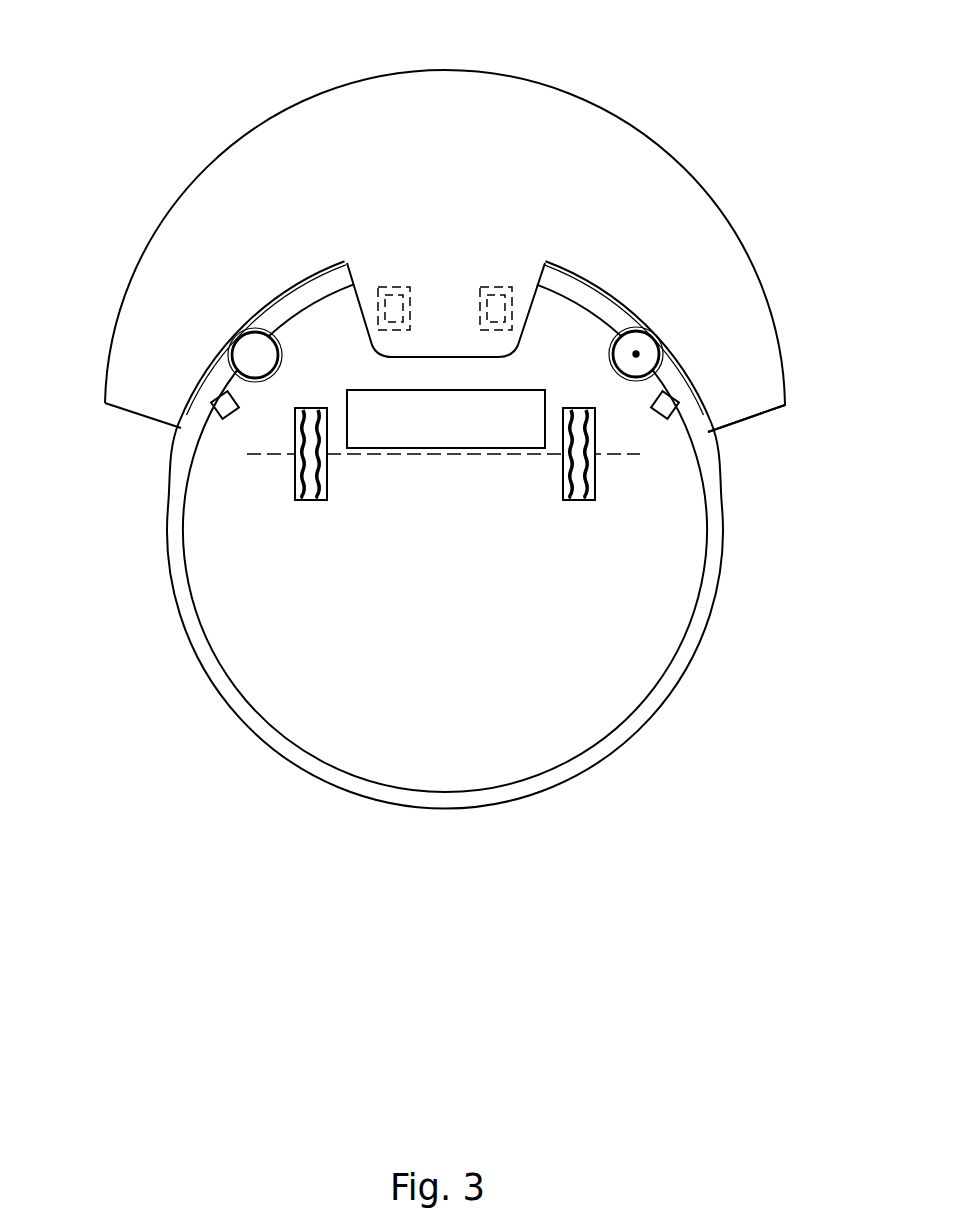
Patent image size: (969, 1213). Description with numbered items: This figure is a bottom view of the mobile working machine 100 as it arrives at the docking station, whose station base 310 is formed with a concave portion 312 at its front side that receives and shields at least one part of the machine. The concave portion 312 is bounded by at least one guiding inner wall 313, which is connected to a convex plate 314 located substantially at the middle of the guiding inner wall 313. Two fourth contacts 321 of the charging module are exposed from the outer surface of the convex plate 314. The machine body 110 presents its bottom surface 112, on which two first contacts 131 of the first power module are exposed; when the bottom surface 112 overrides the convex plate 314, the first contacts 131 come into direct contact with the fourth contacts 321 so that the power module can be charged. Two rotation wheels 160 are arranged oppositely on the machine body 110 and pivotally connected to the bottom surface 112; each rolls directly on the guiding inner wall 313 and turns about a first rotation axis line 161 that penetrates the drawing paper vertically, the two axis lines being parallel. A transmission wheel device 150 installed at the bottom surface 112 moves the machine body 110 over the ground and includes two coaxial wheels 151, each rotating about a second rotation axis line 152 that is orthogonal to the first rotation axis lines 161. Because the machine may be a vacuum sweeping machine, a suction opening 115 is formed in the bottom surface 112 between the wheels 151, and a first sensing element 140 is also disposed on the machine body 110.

The mobile working machine 100 is at (300, 765).
The machine body 110 is at (707, 622).
The bottom surface 112 is at (647, 658).
The suction opening 115 is at (363, 408).
The first contacts 131 is at (393, 300).
The first sensing element 140 is at (693, 397).
The transmission wheel device 150 is at (319, 495).
The wheels 151 is at (313, 500).
The second rotation axis line 152 is at (283, 454).
The rotation wheels 160 is at (250, 350).
The first rotation axis line 161 is at (665, 395).
The station base 310 is at (263, 117).
The concave portion 312 is at (332, 270).
The guiding inner wall 313 is at (597, 290).
The convex plate 314 is at (370, 305).
The fourth contacts 321 is at (500, 300).